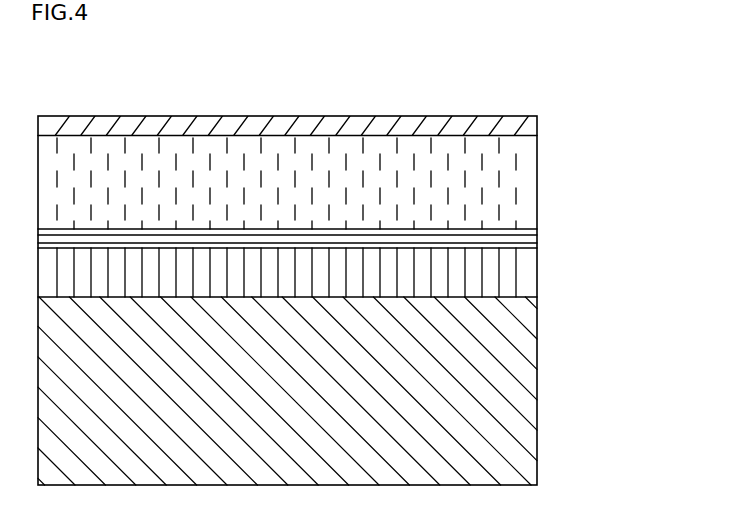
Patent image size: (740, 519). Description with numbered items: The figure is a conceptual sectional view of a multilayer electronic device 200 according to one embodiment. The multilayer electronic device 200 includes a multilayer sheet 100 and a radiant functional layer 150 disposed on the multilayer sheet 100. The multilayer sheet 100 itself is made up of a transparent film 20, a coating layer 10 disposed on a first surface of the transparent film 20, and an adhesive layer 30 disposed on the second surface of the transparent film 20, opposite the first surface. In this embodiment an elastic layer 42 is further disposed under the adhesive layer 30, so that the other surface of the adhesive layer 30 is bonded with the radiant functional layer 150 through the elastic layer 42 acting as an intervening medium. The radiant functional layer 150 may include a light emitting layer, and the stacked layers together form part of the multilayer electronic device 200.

The multilayer electronic device 200 is at (79, 77).
The multilayer sheet 100 is at (611, 101).
The coating layer 10 is at (537, 122).
The transparent film 20 is at (537, 180).
The adhesive layer 30 is at (537, 235).
The elastic layer 42 is at (537, 270).
The radiant functional layer 150 is at (537, 397).